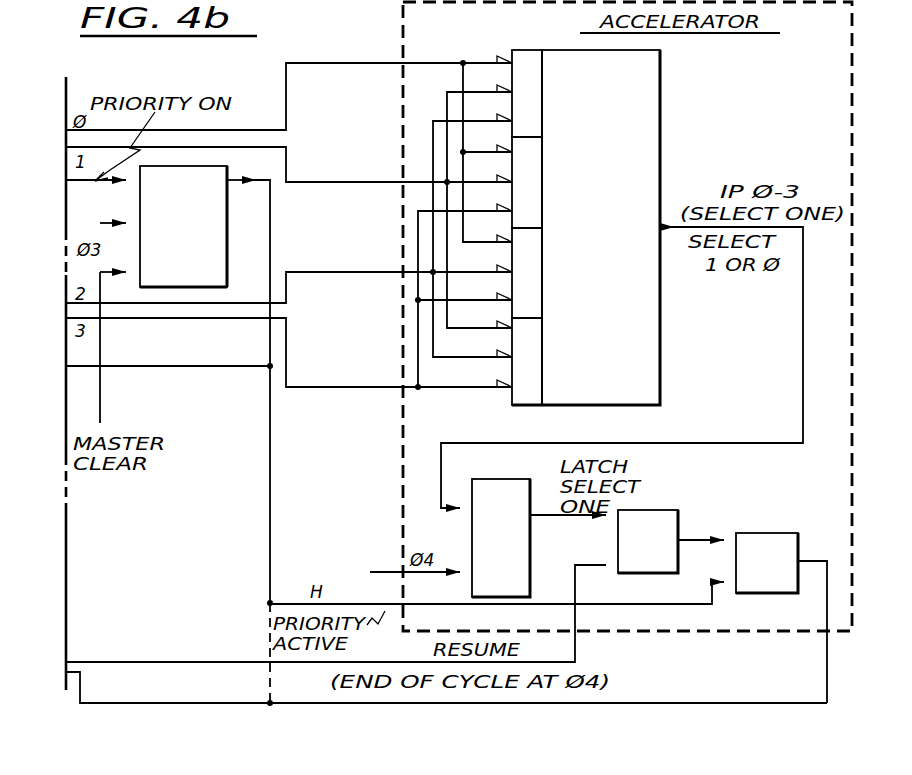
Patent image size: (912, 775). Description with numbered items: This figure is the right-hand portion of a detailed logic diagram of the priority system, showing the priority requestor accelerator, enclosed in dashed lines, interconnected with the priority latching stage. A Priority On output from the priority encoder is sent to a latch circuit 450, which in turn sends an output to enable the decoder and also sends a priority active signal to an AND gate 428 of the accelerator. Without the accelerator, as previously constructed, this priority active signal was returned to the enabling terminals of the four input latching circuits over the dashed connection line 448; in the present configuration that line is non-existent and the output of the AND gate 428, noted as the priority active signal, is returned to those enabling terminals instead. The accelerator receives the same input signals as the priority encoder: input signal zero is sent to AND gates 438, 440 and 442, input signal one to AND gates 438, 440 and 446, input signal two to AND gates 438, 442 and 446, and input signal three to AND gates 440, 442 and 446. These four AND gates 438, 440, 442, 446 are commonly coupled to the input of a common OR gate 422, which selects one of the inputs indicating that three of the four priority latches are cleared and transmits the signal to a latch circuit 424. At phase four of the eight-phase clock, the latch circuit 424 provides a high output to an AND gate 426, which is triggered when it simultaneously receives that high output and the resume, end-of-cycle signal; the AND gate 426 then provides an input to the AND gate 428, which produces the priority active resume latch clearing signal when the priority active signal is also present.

The OR gate 422 is at (660, 310).
The latch circuit 424 is at (530, 542).
The AND gate 426 is at (642, 510).
The AND gate 428 is at (745, 533).
The AND gate 438 is at (545, 100).
The AND gate 440 is at (545, 190).
The AND gate 442 is at (548, 278).
The AND gate 446 is at (545, 366).
The dashed connection line 448 is at (268, 683).
The latch circuit 450 is at (230, 272).